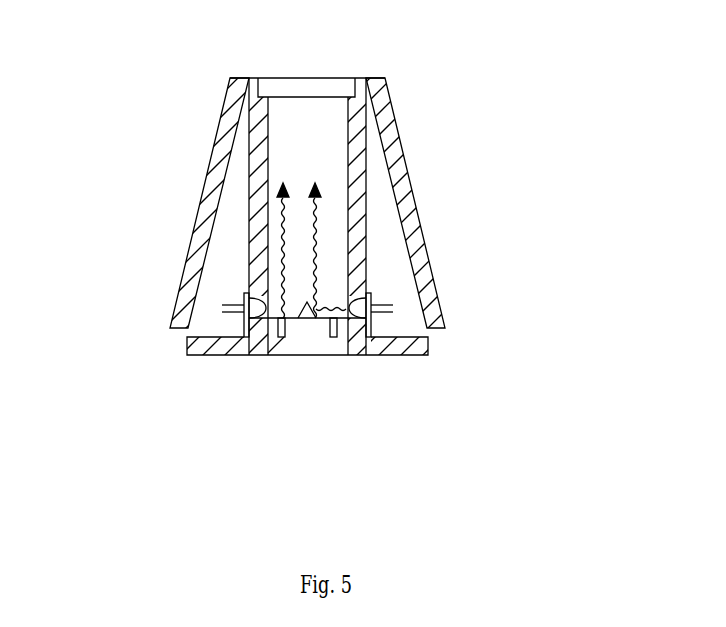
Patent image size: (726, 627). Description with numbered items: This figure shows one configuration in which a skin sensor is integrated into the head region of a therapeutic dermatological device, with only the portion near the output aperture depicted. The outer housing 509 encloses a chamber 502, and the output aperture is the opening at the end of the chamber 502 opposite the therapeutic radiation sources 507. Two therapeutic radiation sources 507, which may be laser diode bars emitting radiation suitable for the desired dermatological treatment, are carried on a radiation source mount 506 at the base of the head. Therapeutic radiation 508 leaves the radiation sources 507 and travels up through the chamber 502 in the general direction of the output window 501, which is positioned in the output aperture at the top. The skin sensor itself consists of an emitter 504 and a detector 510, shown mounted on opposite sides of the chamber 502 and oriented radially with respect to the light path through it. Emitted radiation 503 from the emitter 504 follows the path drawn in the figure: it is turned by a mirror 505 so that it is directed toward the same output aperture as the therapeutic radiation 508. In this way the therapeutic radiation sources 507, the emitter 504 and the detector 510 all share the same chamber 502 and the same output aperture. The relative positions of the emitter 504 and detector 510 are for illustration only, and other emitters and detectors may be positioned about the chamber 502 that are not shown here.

The output window 501 is at (337, 90).
The chamber 502 is at (353, 150).
The emitted radiation 503 is at (317, 245).
The emitter 504 is at (375, 305).
The mirror 505 is at (308, 303).
The radiation source mount 506 is at (303, 345).
The therapeutic radiation source 507 is at (280, 340).
The radiation 508 is at (283, 237).
The housing 509 is at (222, 150).
The detector 510 is at (244, 305).